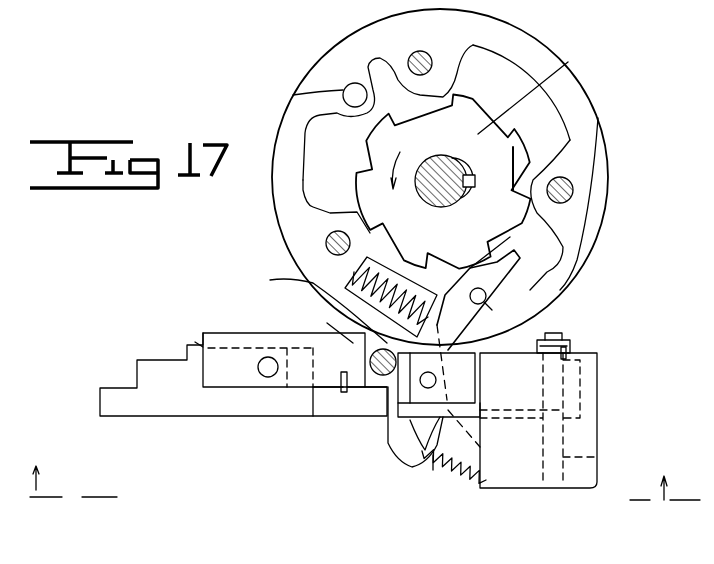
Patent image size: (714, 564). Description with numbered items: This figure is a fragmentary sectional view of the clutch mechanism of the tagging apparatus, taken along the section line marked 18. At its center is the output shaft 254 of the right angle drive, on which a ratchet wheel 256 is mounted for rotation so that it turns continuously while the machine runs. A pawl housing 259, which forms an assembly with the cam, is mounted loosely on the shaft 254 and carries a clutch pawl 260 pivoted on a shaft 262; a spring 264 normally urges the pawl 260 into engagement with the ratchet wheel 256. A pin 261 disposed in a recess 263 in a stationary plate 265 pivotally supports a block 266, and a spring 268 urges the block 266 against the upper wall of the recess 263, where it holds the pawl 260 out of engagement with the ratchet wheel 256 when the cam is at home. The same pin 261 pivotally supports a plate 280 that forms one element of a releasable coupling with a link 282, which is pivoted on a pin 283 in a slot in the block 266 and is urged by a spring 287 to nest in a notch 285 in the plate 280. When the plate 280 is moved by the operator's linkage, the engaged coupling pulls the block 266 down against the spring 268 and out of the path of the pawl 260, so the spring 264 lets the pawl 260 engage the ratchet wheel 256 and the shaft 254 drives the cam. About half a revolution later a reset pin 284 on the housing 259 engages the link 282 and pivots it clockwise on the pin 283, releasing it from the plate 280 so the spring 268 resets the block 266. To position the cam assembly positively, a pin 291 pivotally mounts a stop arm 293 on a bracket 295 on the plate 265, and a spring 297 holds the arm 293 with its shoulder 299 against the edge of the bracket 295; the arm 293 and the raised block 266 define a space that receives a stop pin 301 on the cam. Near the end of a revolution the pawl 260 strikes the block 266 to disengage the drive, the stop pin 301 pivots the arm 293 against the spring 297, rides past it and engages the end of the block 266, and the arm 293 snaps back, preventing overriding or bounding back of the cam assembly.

The section line 18- 18 is at (360, 469).
The output shaft 254 is at (462, 160).
The ratchet wheel 256 is at (563, 62).
The pawl housing 259 is at (594, 127).
The clutch pawl 260 is at (495, 282).
The pin 261 is at (570, 459).
The shaft 262 is at (492, 313).
The recess 263 is at (585, 398).
The spring 264 is at (340, 296).
The stationary plate 265 is at (366, 402).
The block 266 is at (460, 385).
The spring 268 is at (575, 345).
The plate 280 is at (406, 445).
The link 282 is at (430, 470).
The pin 283 is at (436, 392).
The reset pin 284 is at (343, 93).
The notch 285 is at (480, 446).
The spring 287 is at (485, 481).
The pin 291 is at (270, 357).
The stop arm 293 is at (277, 398).
The bracket 295 is at (226, 405).
The spring 297 is at (345, 395).
The shoulder 299 is at (196, 342).
The stop pin 301 is at (328, 311).